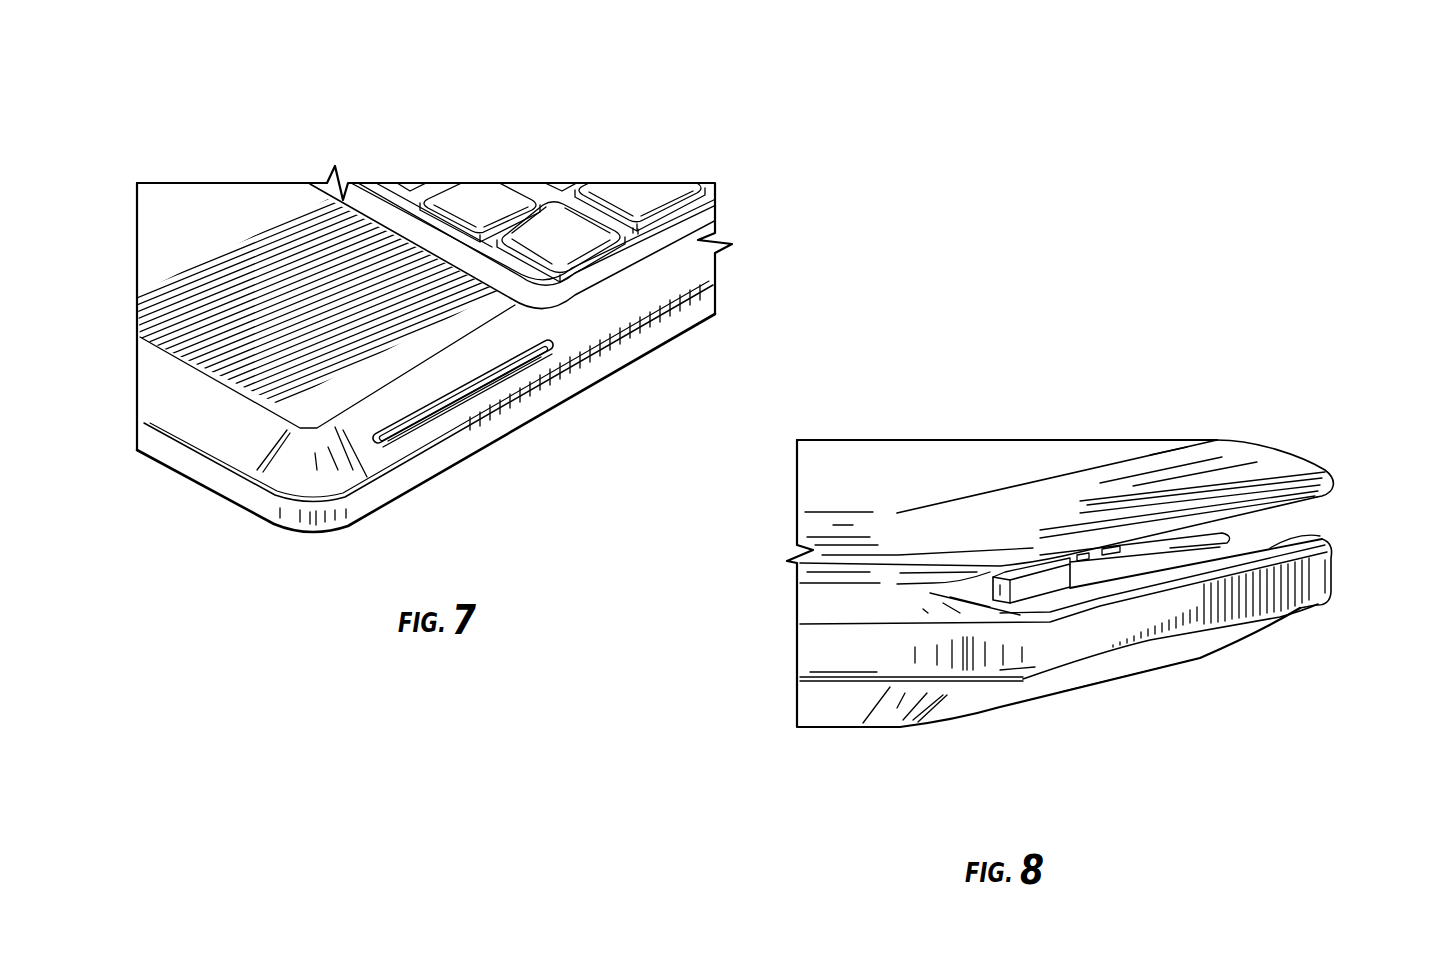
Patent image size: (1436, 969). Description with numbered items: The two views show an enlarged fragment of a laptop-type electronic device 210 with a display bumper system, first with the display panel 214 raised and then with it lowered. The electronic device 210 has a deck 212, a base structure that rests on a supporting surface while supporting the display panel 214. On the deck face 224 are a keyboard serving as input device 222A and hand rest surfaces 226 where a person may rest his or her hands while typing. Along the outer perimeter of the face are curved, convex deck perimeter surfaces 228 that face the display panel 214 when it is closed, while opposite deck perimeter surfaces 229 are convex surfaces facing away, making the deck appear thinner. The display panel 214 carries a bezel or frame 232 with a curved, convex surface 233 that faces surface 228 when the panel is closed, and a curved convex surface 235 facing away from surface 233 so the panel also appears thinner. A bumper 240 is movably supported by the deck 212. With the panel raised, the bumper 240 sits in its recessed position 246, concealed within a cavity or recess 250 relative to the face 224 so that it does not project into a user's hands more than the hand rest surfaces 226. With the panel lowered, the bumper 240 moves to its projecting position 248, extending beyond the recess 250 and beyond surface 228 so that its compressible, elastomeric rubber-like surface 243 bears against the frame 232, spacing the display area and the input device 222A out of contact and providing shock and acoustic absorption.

In FIG. 7, the electronic device 210 is at (231, 178).
In FIG. 8, the electronic device 210 is at (908, 422).
In FIG. 8, the deck 212 is at (923, 727).
In FIG. 8, the display panel 214 is at (1080, 432).
In FIG. 7, the input device 222A is at (660, 197).
In FIG. 7, the deck face 224 is at (650, 306).
In FIG. 7, the hand rest surfaces 226 is at (310, 372).
In FIG. 8, the hand rest surfaces 226 is at (880, 583).
In FIG. 7, the deck perimeter surfaces 228 is at (590, 318).
In FIG. 8, the deck perimeter surfaces 228 is at (1310, 534).
In FIG. 8, the deck perimeter surfaces 229 is at (1197, 657).
In FIG. 8, the frame 232 is at (1283, 512).
In FIG. 8, the curved, convex surface 233 is at (1323, 500).
In FIG. 8, the curved convex surface 235 is at (1239, 460).
In FIG. 7, the bumper 240 is at (420, 430).
In FIG. 8, the bumper 240 is at (1050, 578).
In FIG. 7, the rubber-like surface 243 is at (460, 397).
In FIG. 7, the recessed position 246 is at (690, 133).
In FIG. 8, the projecting position 248 is at (1252, 284).
In FIG. 7, the recess 250 is at (530, 363).
In FIG. 8, the recess 250 is at (1025, 603).